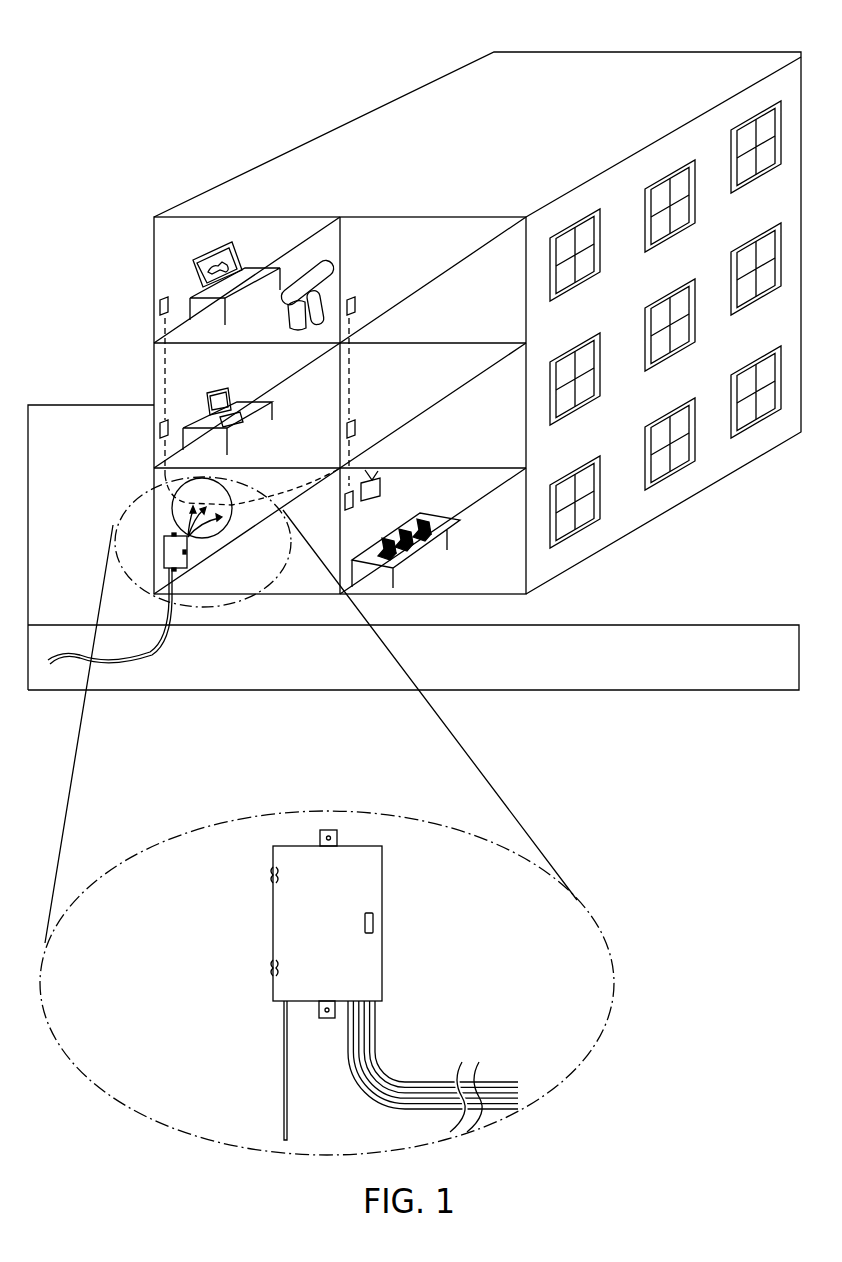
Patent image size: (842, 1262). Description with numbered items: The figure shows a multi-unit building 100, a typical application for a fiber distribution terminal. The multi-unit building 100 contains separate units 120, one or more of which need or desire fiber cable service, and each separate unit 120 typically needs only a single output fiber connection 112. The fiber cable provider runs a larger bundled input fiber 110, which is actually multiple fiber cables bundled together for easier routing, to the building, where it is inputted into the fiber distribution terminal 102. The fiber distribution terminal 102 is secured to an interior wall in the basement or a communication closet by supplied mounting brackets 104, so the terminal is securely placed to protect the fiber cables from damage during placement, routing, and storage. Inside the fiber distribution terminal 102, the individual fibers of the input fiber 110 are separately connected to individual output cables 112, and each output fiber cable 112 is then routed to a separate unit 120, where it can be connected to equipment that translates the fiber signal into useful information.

The multi-unit building 100 is at (174, 68).
The fiber distribution terminal 102 is at (163, 550).
The mounting brackets 104 is at (318, 838).
The input fiber 110 is at (162, 650).
The output fiber connection 112 is at (172, 500).
The separate units 120 is at (168, 242).